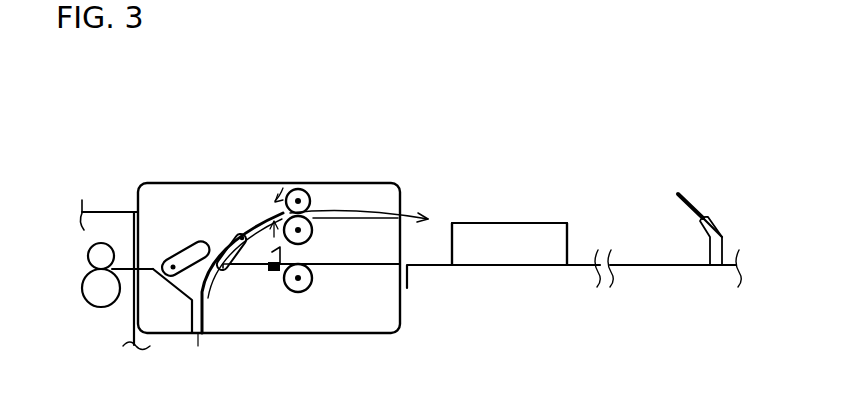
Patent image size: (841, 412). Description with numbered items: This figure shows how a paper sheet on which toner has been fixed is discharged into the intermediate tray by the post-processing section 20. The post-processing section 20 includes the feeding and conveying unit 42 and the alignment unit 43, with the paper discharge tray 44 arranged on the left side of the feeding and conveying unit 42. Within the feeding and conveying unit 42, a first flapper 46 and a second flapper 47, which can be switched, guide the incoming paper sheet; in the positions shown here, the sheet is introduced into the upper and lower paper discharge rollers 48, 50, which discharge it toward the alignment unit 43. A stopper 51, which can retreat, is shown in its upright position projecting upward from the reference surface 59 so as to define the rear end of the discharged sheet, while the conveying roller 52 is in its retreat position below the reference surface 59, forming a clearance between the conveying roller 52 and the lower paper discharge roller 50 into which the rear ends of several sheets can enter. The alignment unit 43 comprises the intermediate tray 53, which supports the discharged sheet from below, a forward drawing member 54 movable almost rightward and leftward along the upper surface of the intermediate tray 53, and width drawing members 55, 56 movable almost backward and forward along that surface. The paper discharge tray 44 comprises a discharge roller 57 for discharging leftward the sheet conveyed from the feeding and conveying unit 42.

The post-processing section 20 is at (353, 183).
The feeding and conveying unit 42 is at (170, 183).
The alignment unit 43 is at (579, 260).
The paper discharge tray 44 is at (103, 212).
The first flapper 46 is at (178, 262).
The second flapper 47 is at (232, 278).
The upper paper discharge roller 48 is at (313, 189).
The lower paper discharge roller 50 is at (310, 234).
The stopper 51 is at (266, 252).
The conveying roller 52 is at (307, 292).
The intermediate tray 53 is at (632, 262).
The forward drawing member 54 is at (724, 232).
The width drawing member 55 is at (490, 237).
The width drawing member 56 is at (509, 244).
The discharge roller 57 is at (88, 262).
The reference surface 59 is at (378, 264).